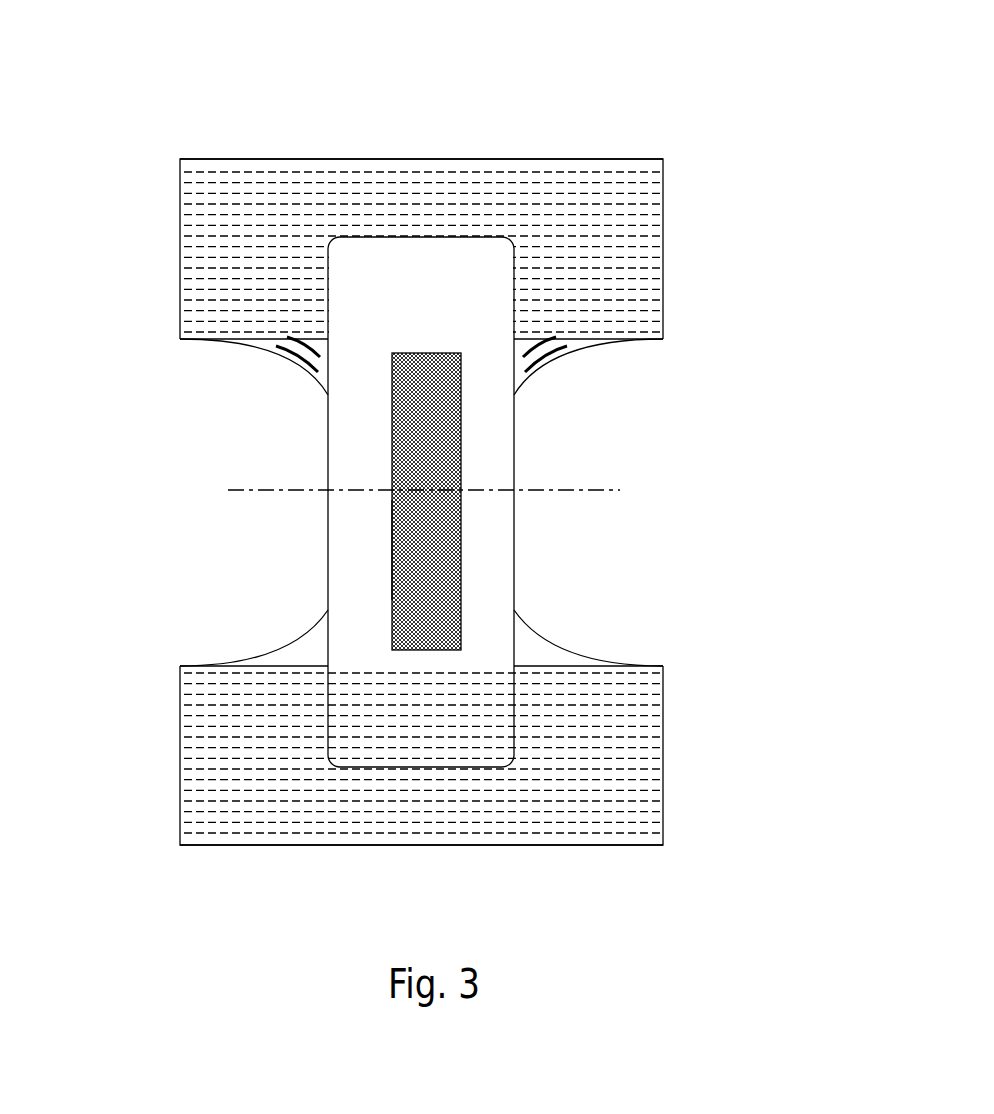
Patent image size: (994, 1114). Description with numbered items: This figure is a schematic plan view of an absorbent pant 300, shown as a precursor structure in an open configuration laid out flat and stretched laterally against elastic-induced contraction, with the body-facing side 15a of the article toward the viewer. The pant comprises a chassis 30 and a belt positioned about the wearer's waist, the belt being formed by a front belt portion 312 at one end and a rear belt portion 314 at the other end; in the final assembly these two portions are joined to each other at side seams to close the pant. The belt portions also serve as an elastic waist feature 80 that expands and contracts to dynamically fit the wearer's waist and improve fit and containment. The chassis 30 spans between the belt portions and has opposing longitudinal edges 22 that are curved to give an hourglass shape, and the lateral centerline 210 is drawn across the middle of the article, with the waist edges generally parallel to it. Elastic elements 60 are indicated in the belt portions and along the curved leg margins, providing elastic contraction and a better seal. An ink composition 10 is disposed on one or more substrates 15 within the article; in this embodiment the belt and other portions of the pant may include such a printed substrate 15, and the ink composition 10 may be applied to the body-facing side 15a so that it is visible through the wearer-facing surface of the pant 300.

The absorbent pant 300 is at (436, 490).
The elastic waist feature 80 is at (680, 195).
The rear belt portion 314 is at (450, 173).
The body-facing side 15a is at (238, 848).
The front belt portion 312 is at (532, 840).
The elastic elements 60 is at (180, 238).
The substrate 15 is at (589, 338).
The ink composition 10 is at (303, 352).
The longitudinal edges 22 is at (442, 520).
The chassis 30 is at (390, 540).
The lateral centerline 210 is at (248, 497).